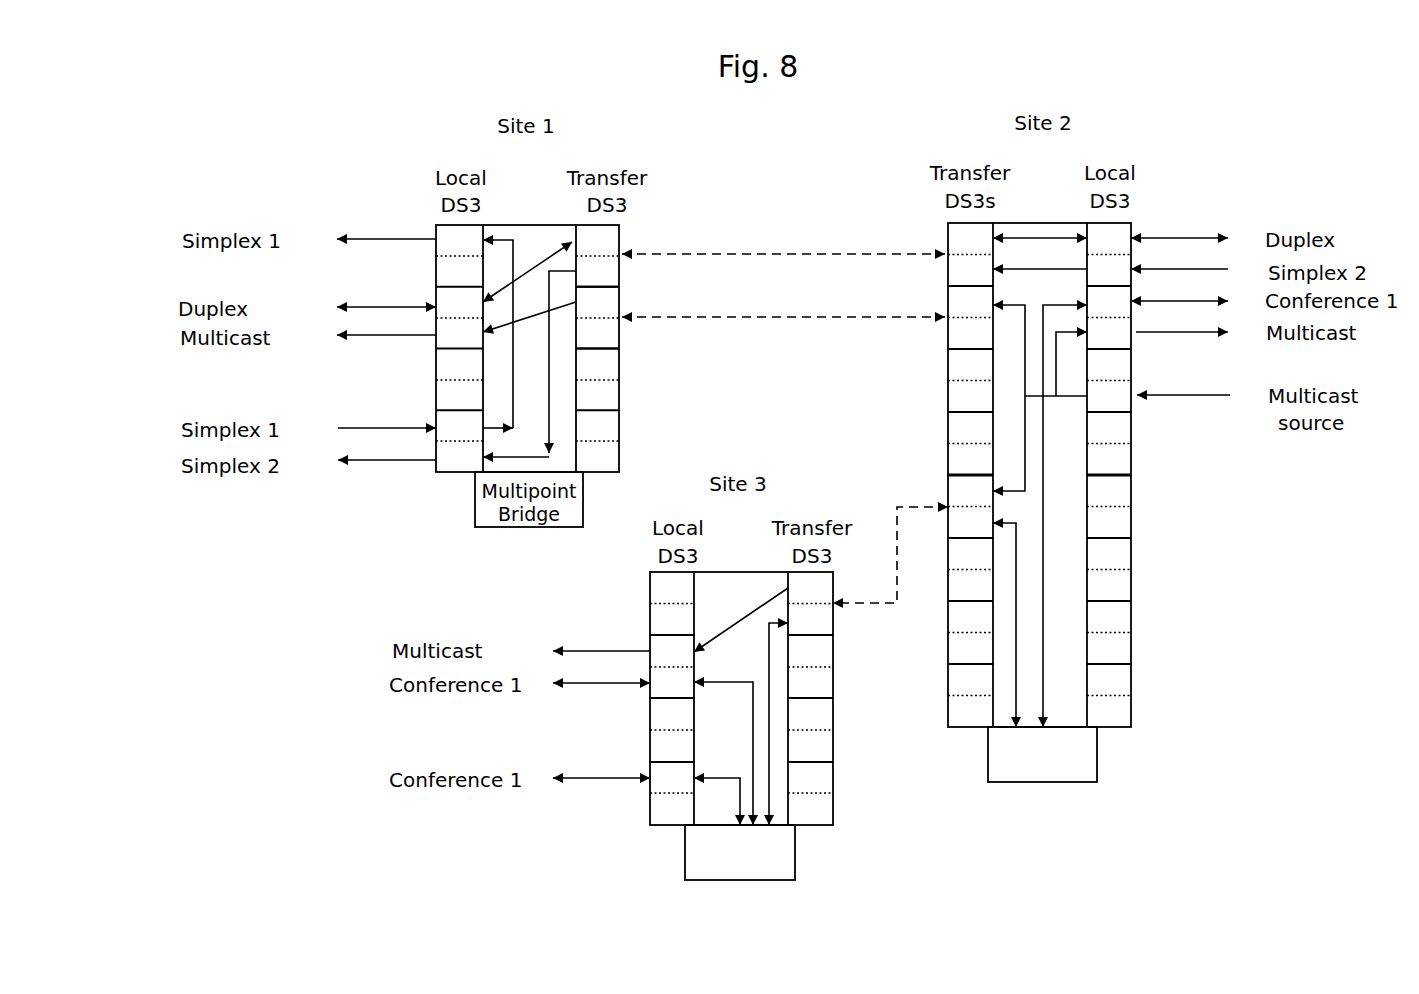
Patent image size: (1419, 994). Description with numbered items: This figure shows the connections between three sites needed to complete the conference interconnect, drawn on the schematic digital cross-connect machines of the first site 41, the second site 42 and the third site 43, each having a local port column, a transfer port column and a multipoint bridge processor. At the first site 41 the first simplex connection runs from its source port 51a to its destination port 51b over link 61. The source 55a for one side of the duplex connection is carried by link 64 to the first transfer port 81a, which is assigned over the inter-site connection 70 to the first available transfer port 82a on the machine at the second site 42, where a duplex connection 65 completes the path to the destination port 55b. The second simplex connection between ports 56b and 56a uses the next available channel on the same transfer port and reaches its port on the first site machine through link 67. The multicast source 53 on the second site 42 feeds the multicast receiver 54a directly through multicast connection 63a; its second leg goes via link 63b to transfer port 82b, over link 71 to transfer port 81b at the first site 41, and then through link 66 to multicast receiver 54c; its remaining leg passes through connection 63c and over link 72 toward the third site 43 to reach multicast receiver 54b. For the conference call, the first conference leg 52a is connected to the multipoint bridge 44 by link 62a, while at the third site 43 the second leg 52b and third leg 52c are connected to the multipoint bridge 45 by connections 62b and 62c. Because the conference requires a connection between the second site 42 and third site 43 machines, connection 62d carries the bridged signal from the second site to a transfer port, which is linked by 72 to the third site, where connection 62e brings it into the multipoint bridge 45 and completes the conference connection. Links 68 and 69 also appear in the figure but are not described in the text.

The Site 1 machine 41 is at (530, 225).
The Site 2 machine 42 is at (1053, 223).
The Site 3 machine 43 is at (756, 572).
The Multipoint Bridge 44 is at (1097, 755).
The Multipoint Bridge 45 is at (795, 850).
The first simplex connection source 51a is at (402, 239).
The first simplex connection destination 51b is at (373, 430).
The first conference leg 52a is at (1178, 303).
The second conference leg 52b is at (593, 780).
The third conference leg 52c is at (607, 685).
The multicast source 53 is at (1158, 397).
The multicast receiver 54a is at (1158, 333).
The multicast receiver 54b is at (607, 650).
The multicast receiver 54c is at (411, 335).
The duplex connection source 55a is at (402, 303).
The duplex connection destination port 55b is at (1202, 238).
The second simplex connection port 56a is at (403, 462).
The second simplex connection port 56b is at (1179, 269).
The link 61 is at (510, 367).
The link 62a is at (1038, 356).
The connection 62b is at (757, 735).
The connection 62c is at (737, 798).
The connection 62d is at (1012, 628).
The connection 62e is at (767, 683).
The multicast connection 63a is at (1053, 378).
The link 63b is at (1020, 346).
The connection 63c is at (1022, 449).
The link 64 is at (530, 275).
The duplex connection 65 is at (1030, 236).
The link 66 is at (530, 317).
The link 67 is at (549, 400).
The simplex 2 cross-connect path at Site 2 68 is at (1053, 269).
The multicast cross-connect path at Site 3 69 is at (742, 618).
The connection between transfer ports 70 is at (753, 252).
The link 71 is at (797, 314).
The link 72 is at (862, 603).
The first transfer DS3 81a is at (603, 273).
The transfer DS3 81b is at (605, 335).
The first available transfer DS3 82a is at (955, 273).
The transfer DS3 82b is at (957, 335).